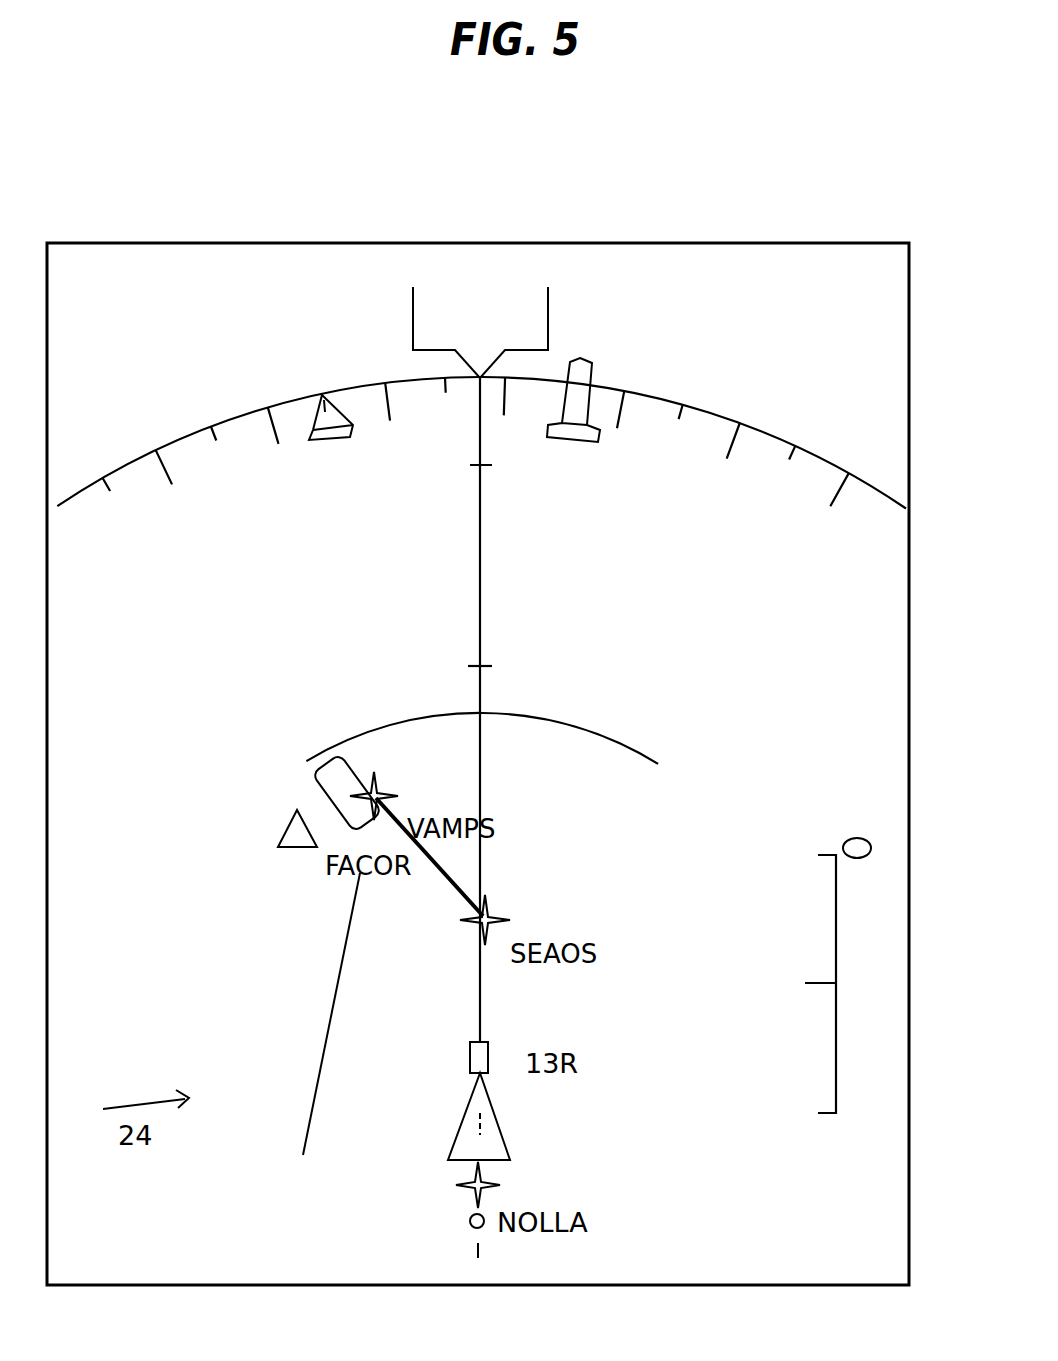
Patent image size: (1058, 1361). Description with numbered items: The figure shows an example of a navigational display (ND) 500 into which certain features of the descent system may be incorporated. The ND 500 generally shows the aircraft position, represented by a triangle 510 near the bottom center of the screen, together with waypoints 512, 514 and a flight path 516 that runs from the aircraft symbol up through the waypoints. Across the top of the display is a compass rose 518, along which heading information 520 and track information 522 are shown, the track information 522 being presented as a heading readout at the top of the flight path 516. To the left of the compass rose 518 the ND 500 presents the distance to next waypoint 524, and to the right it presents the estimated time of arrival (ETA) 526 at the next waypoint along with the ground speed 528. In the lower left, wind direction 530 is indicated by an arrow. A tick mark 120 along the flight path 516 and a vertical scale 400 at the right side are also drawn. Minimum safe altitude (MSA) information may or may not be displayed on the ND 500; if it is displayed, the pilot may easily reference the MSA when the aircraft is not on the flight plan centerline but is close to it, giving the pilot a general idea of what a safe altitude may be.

The navigational display 500 is at (709, 205).
The triangle 510 is at (503, 1126).
The waypoint 512 is at (386, 794).
The waypoint 514 is at (291, 848).
The flight path 516 is at (482, 1012).
The compass rose 518 is at (157, 449).
The heading information 520 is at (337, 442).
The track information 522 is at (487, 291).
The distance to next waypoint 524 is at (156, 294).
The estimated time of arrival 526 is at (775, 294).
The ground speed 528 is at (804, 402).
The wind direction 530 is at (155, 1172).
The range tick mark 120 is at (485, 660).
The vertical scale 400 is at (838, 960).